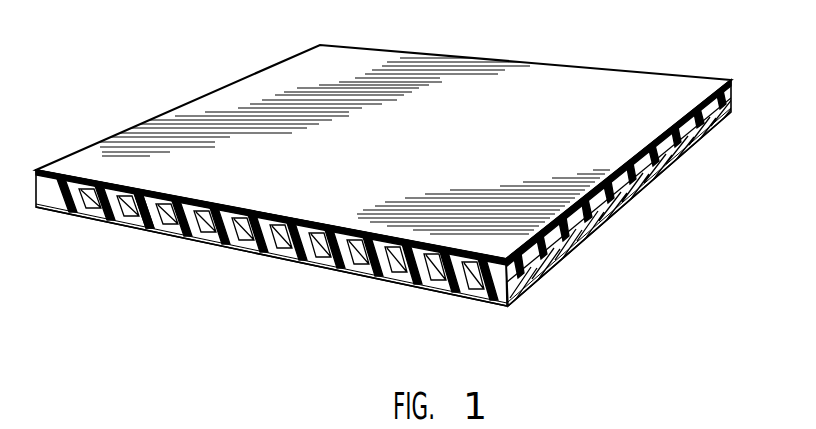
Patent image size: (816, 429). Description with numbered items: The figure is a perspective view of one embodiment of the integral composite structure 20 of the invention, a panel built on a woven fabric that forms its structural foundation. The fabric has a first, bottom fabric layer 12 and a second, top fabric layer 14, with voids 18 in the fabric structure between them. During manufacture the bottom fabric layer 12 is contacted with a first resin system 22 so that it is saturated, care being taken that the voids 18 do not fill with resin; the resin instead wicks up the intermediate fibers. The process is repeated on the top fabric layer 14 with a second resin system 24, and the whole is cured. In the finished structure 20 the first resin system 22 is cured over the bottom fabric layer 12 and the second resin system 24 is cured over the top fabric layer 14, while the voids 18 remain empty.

The integral composite structure 20 is at (214, 78).
The second (top) fabric layer 14 is at (472, 63).
The first (bottom) fabric layer 12 is at (290, 259).
The second resin system 24 is at (735, 84).
The voids 18 is at (156, 216).
The first resin system 22 is at (498, 298).